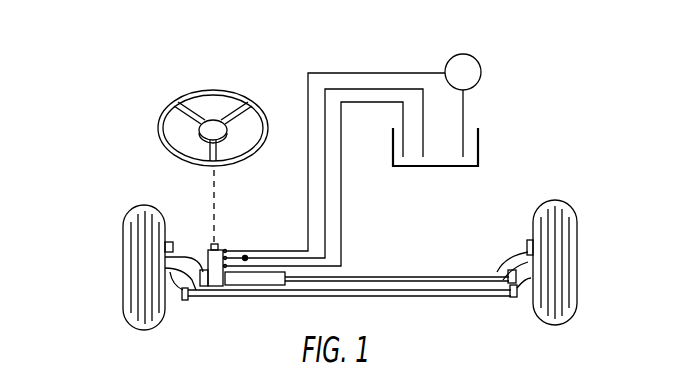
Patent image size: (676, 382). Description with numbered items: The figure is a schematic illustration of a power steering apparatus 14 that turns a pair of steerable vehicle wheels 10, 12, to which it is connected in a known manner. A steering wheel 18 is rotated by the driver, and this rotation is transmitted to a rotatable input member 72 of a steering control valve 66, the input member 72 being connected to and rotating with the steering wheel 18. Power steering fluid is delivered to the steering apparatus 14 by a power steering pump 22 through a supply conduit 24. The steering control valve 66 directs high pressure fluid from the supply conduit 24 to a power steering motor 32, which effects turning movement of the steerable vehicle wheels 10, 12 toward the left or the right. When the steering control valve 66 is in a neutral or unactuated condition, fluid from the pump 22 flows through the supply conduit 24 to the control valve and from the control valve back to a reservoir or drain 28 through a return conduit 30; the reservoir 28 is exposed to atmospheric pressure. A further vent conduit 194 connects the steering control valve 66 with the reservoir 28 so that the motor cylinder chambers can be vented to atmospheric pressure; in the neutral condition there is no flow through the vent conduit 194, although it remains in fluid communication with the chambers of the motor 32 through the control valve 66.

The steerable vehicle wheel 10 is at (128, 286).
The steerable vehicle wheel 12 is at (572, 287).
The power steering apparatus 14 is at (247, 256).
The steering wheel 18 is at (165, 108).
The power steering pump 22 is at (481, 72).
The supply conduit 24 is at (338, 73).
The reservoir or drain 28 is at (478, 150).
The return conduit 30 is at (378, 89).
The power steering motor 32 is at (271, 283).
The steering control valve 66 is at (224, 283).
The rotatable input member 72 is at (212, 248).
The vent conduit 194 is at (342, 188).